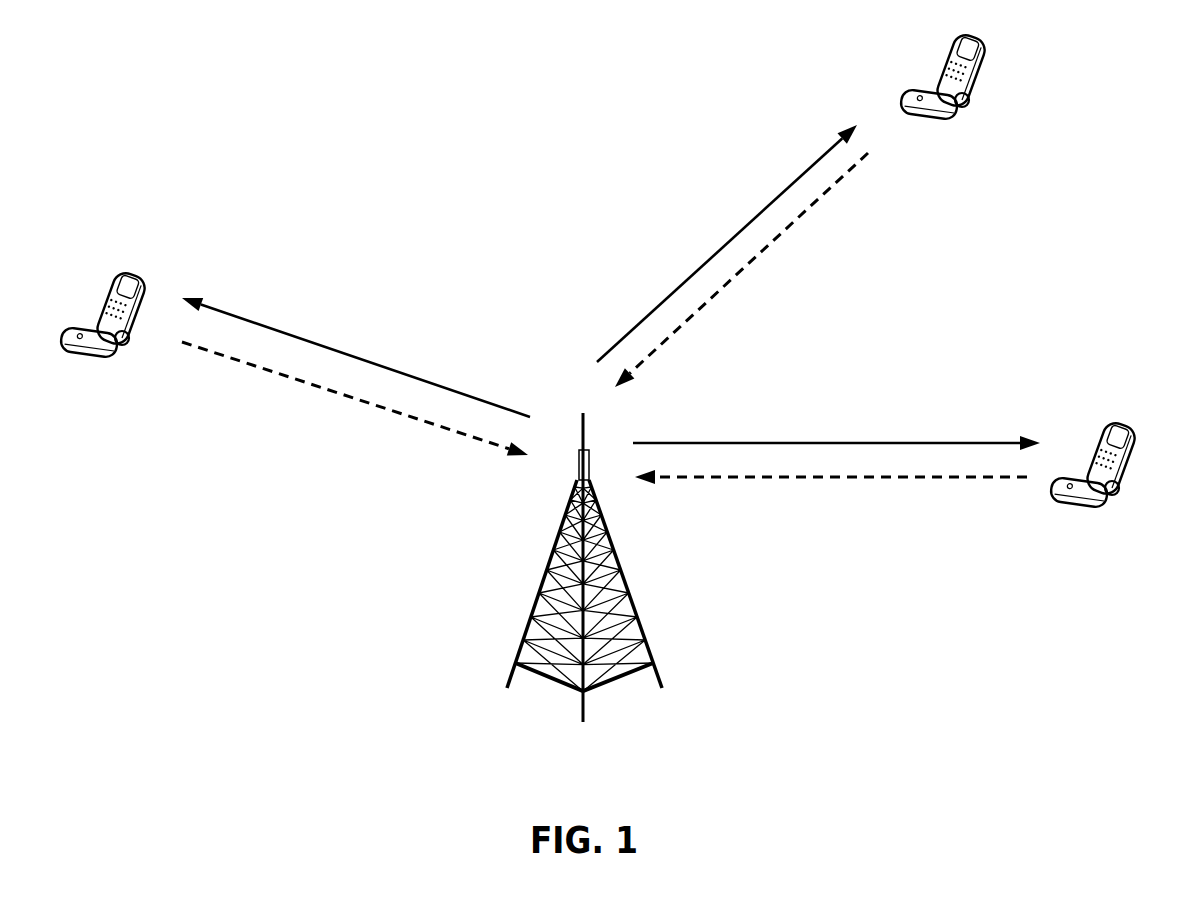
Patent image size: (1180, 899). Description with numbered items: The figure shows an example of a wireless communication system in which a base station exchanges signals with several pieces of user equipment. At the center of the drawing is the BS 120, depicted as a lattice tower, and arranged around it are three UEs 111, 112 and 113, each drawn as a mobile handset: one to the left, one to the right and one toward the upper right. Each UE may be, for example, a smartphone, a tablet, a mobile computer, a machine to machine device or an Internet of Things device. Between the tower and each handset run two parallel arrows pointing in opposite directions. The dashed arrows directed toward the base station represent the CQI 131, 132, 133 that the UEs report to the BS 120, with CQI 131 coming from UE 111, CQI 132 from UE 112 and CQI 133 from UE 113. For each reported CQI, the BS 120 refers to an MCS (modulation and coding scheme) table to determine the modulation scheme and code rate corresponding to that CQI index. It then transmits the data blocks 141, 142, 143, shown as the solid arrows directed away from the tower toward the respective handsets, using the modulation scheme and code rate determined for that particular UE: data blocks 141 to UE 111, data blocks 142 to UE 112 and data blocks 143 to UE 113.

The user equipment 111 is at (118, 358).
The user equipment 112 is at (1108, 505).
The user equipment 113 is at (958, 115).
The base station 120 is at (643, 643).
The CQI report 131 is at (393, 412).
The CQI report 132 is at (797, 478).
The CQI report 133 is at (767, 245).
The data blocks 141 is at (288, 337).
The data blocks 142 is at (948, 440).
The data blocks 143 is at (775, 198).